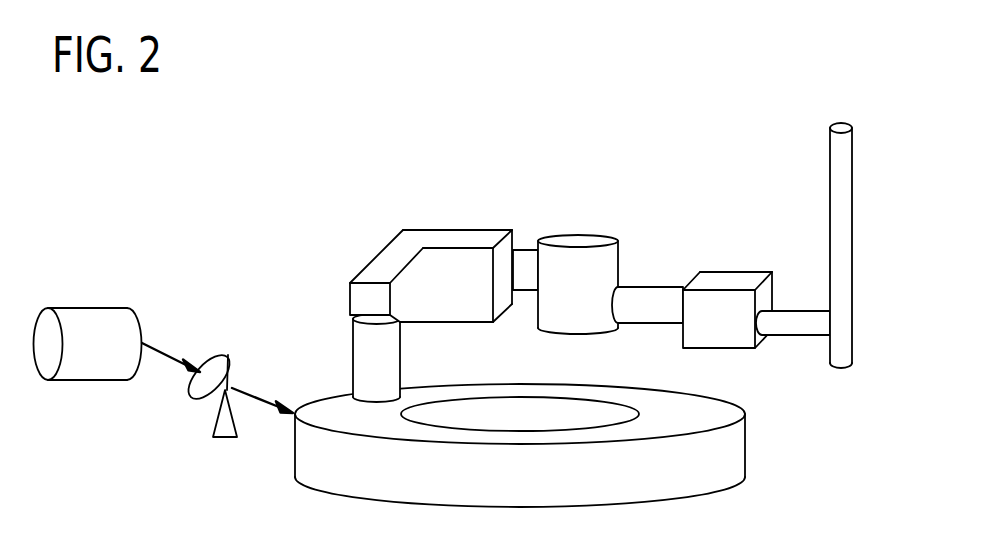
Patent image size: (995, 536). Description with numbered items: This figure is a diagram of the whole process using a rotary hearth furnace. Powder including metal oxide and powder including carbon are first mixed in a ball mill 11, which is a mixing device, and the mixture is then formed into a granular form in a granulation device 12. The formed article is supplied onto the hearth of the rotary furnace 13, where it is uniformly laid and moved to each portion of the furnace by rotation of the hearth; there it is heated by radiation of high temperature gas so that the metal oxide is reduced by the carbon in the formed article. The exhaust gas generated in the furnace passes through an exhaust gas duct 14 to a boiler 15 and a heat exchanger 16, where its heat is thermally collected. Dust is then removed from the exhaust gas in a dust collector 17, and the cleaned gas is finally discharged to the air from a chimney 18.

The ball mill 11 is at (73, 317).
The granulation device 12 is at (210, 353).
The rotary furnace 13 is at (723, 458).
The exhaust gas duct 14 is at (357, 360).
The boiler 15 is at (425, 238).
The heat exchanger 16 is at (558, 255).
The dust collector 17 is at (723, 278).
The chimney 18 is at (833, 212).